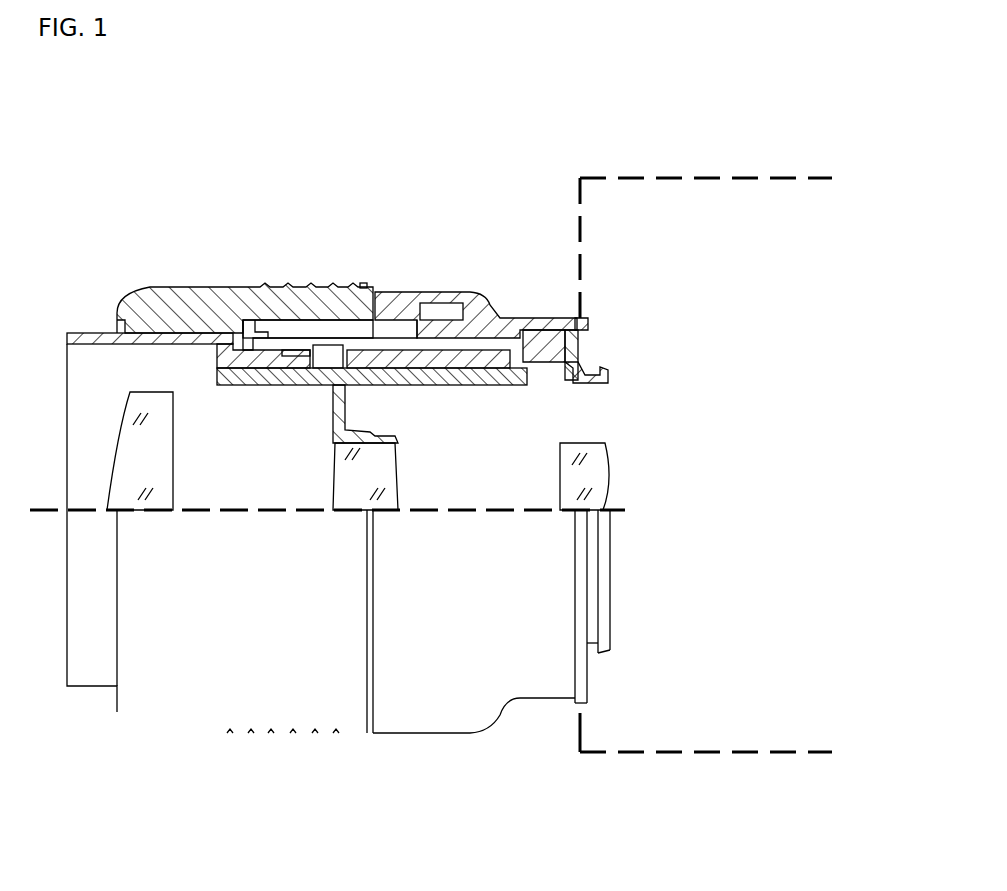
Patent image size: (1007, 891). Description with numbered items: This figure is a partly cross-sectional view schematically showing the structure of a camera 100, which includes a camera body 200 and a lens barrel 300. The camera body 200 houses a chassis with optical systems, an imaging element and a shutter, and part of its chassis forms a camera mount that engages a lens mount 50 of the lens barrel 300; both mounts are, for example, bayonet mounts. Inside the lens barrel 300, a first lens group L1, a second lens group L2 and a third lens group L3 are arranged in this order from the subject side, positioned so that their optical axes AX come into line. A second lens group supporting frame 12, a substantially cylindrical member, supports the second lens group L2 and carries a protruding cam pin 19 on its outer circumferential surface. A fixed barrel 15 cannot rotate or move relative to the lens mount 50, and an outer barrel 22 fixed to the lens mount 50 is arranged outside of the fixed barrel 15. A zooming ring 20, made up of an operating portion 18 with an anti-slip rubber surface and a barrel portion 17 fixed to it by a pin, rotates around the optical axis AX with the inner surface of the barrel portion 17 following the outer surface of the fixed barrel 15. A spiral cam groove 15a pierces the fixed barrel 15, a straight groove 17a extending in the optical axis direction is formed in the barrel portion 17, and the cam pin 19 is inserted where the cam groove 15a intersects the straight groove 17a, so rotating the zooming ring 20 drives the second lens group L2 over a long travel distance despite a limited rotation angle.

The camera 100 is at (640, 126).
The camera body 200 is at (697, 172).
The lens barrel 300 is at (143, 280).
The fixed barrel 15 is at (83, 332).
The cam groove 15a is at (307, 386).
The barrel portion 17 is at (290, 318).
The straight groove 17a is at (263, 385).
The operating portion 18 is at (262, 287).
The cam pin 19 is at (372, 284).
The zooming ring 20 is at (342, 227).
The outer barrel 22 is at (440, 290).
The second lens group supporting frame 12 is at (450, 386).
The lens mount 50 is at (588, 384).
The first lens group L1 is at (173, 465).
The second lens group L2 is at (398, 465).
The third lens group L3 is at (558, 486).
The optical axis AX is at (490, 512).